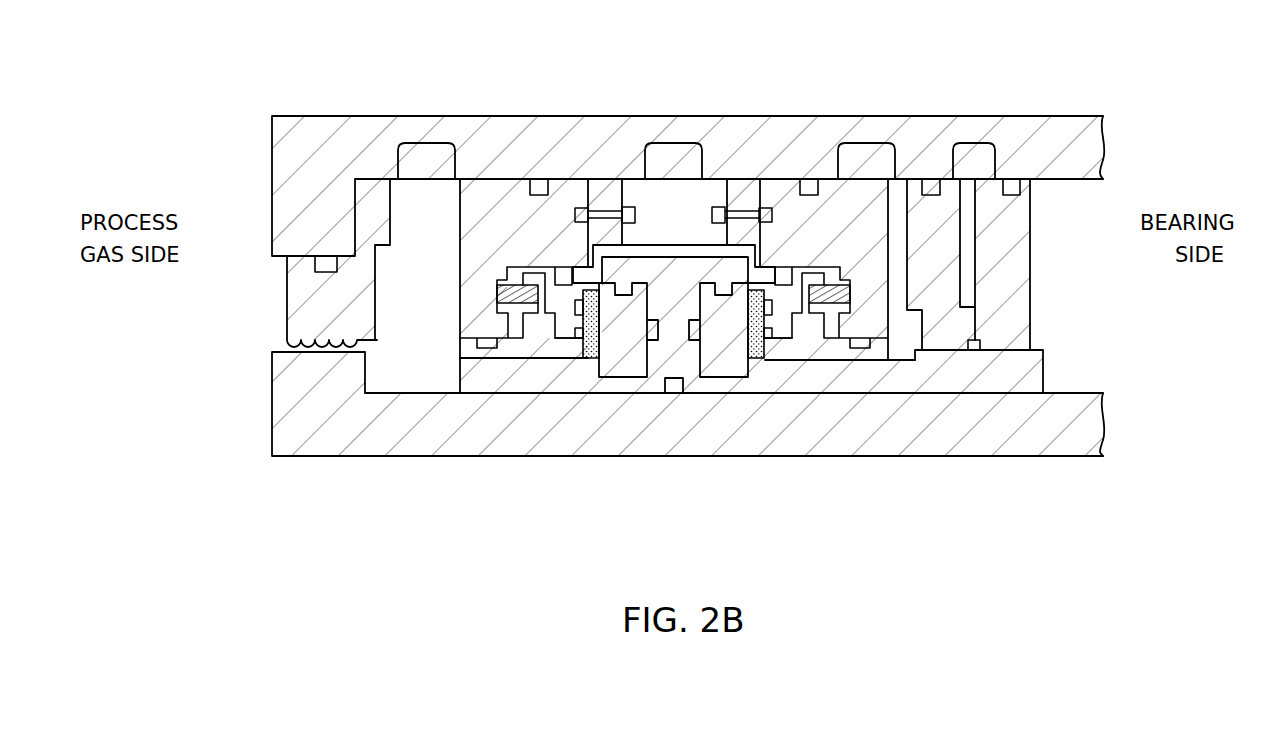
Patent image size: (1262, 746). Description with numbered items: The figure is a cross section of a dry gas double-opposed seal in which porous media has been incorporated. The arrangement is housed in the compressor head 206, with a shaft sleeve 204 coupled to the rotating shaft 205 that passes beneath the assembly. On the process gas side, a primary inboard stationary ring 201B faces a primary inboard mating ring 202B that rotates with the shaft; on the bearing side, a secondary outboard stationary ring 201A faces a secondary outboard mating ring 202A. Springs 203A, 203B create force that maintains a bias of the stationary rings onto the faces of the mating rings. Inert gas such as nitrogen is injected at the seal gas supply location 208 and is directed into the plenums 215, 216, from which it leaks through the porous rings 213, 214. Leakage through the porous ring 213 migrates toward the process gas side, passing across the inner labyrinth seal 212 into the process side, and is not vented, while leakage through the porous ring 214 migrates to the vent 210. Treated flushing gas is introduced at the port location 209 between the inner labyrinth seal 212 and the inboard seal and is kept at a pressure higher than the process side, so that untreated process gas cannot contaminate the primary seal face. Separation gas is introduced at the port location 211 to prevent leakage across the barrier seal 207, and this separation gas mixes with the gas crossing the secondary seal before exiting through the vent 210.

The secondary outboard stationary ring 201A is at (787, 358).
The primary inboard stationary ring 201B is at (592, 358).
The secondary outboard mating ring 202A is at (728, 377).
The primary inboard mating ring 202B is at (630, 377).
The spring 203A is at (832, 267).
The spring 203B is at (515, 267).
The shaft sleeve 204 is at (460, 377).
The rotating shaft 205 is at (1040, 456).
The compressor head 206 is at (1045, 116).
The barrier seal 207 is at (978, 340).
The seal gas supply location 208 is at (673, 143).
The port location 209 is at (428, 143).
The vent 210 is at (865, 143).
The port location 211 is at (972, 143).
The inner labyrinth seal 212 is at (287, 292).
The porous ring 213 is at (567, 357).
The porous ring 214 is at (753, 358).
The plenum 215 is at (575, 335).
The plenum 216 is at (772, 335).